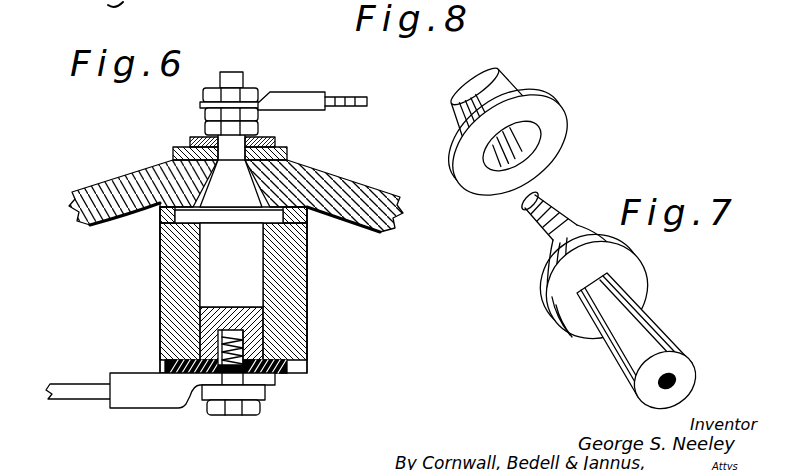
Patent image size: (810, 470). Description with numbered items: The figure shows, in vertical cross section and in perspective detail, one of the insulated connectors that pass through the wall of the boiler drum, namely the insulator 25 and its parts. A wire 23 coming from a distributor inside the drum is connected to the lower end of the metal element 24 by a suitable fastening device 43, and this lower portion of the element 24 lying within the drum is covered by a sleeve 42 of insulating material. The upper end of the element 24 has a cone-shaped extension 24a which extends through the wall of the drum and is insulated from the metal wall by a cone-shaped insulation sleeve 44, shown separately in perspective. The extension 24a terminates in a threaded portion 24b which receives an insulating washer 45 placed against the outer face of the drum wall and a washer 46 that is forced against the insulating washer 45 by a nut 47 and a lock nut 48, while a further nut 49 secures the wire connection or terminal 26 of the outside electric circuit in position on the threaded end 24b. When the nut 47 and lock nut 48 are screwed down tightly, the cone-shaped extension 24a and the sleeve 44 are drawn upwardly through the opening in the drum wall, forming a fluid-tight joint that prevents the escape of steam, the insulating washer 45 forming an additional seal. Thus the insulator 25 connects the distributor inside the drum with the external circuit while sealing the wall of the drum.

In FIG. 6, the wire 23 is at (66, 392).
In FIG. 6, the metal element 24 is at (243, 266).
In FIG. 7, the metal element 24 is at (585, 304).
In FIG. 6, the cone-shaped extension 24a is at (240, 187).
In FIG. 7, the cone-shaped extension 24a is at (553, 277).
In FIG. 6, the threaded portion 24b is at (240, 72).
In FIG. 7, the threaded portion 24b is at (540, 233).
In FIG. 6, the insulator 25 is at (150, 283).
In FIG. 6, the terminals 26 is at (346, 77).
In FIG. 6, the sleeve of insulating material 42 is at (307, 340).
In FIG. 6, the fastening device 43 is at (250, 414).
In FIG. 6, the cone-shaped insulation sleeve 44 is at (167, 167).
In FIG. 8, the cone-shaped insulation sleeve 44 is at (497, 85).
In FIG. 6, the insulating washer 45 is at (182, 148).
In FIG. 6, the washer 46 is at (262, 142).
In FIG. 6, the nut 47 is at (248, 131).
In FIG. 6, the lock nut 48 is at (262, 100).
In FIG. 6, the nut 49 is at (203, 90).